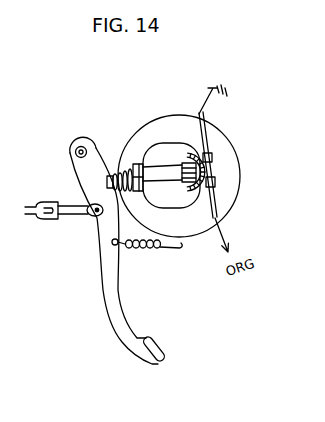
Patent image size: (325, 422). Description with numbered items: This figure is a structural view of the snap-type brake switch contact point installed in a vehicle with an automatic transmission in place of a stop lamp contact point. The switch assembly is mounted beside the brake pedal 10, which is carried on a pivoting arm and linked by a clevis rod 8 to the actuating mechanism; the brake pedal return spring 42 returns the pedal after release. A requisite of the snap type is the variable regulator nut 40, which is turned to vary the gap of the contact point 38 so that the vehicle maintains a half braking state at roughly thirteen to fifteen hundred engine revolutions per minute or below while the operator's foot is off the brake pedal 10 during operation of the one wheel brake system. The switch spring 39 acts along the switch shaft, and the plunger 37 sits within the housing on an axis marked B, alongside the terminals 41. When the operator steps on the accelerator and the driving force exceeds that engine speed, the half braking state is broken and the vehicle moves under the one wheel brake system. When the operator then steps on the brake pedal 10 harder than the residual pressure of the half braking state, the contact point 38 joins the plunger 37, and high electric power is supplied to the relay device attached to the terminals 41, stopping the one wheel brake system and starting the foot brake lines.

The clevis rod 8 is at (70, 218).
The brake pedal 10 is at (156, 369).
The plunger 37 is at (216, 189).
The contact point 38 is at (112, 140).
The switch spring 39 is at (180, 170).
The variable regulator nut 40 is at (142, 164).
The terminals 41 is at (212, 157).
The brake pedal return spring 42 is at (150, 248).
The axis B is at (213, 161).